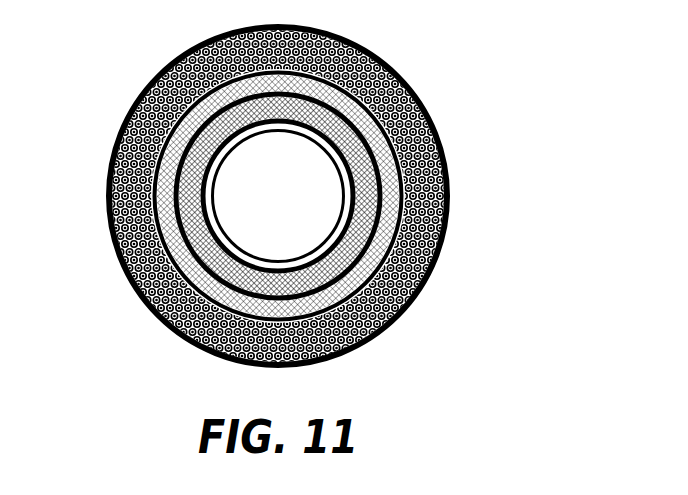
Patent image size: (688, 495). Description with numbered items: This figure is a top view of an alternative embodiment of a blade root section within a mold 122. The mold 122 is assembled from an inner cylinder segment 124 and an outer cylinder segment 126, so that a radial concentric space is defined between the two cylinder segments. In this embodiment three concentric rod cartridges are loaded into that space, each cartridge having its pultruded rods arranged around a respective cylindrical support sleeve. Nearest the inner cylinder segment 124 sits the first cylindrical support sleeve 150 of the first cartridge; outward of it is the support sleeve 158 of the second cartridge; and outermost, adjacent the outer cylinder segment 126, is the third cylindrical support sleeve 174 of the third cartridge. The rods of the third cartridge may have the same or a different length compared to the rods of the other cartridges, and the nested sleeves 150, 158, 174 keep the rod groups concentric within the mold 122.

The mold 122 is at (527, 60).
The outer cylinder segment 126 is at (132, 90).
The third cylindrical support sleeve 174 is at (390, 153).
The support sleeve 158 is at (163, 186).
The first cylindrical support sleeve 150 is at (318, 243).
The inner cylinder segment 124 is at (215, 152).